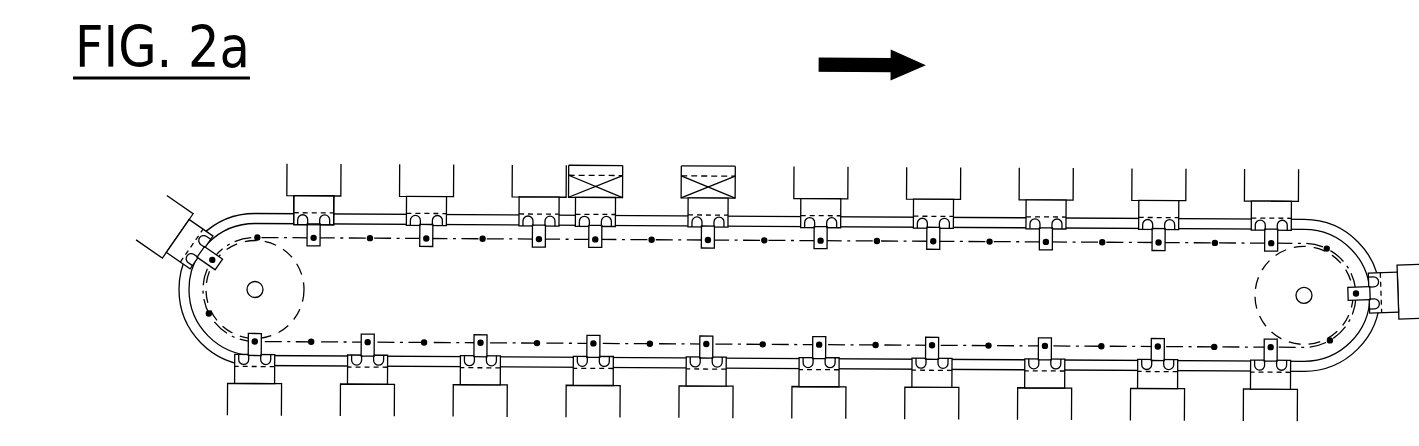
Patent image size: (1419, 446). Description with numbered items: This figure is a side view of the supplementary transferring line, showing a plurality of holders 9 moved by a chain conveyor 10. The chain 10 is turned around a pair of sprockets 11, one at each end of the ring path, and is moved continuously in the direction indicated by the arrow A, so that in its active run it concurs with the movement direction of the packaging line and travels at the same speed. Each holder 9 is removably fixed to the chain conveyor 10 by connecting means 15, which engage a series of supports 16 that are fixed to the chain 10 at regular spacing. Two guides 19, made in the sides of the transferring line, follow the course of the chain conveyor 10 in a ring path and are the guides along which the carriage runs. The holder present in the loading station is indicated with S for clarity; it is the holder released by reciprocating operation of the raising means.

The holders 9 is at (1185, 170).
The chain conveyor 10 is at (778, 240).
The sprockets 11 is at (206, 303).
The connecting means 15 is at (272, 201).
The supports 16 is at (368, 238).
The guides 19 is at (473, 213).
The holder present in the loading station S is at (549, 127).
The movement direction arrow A is at (871, 44).